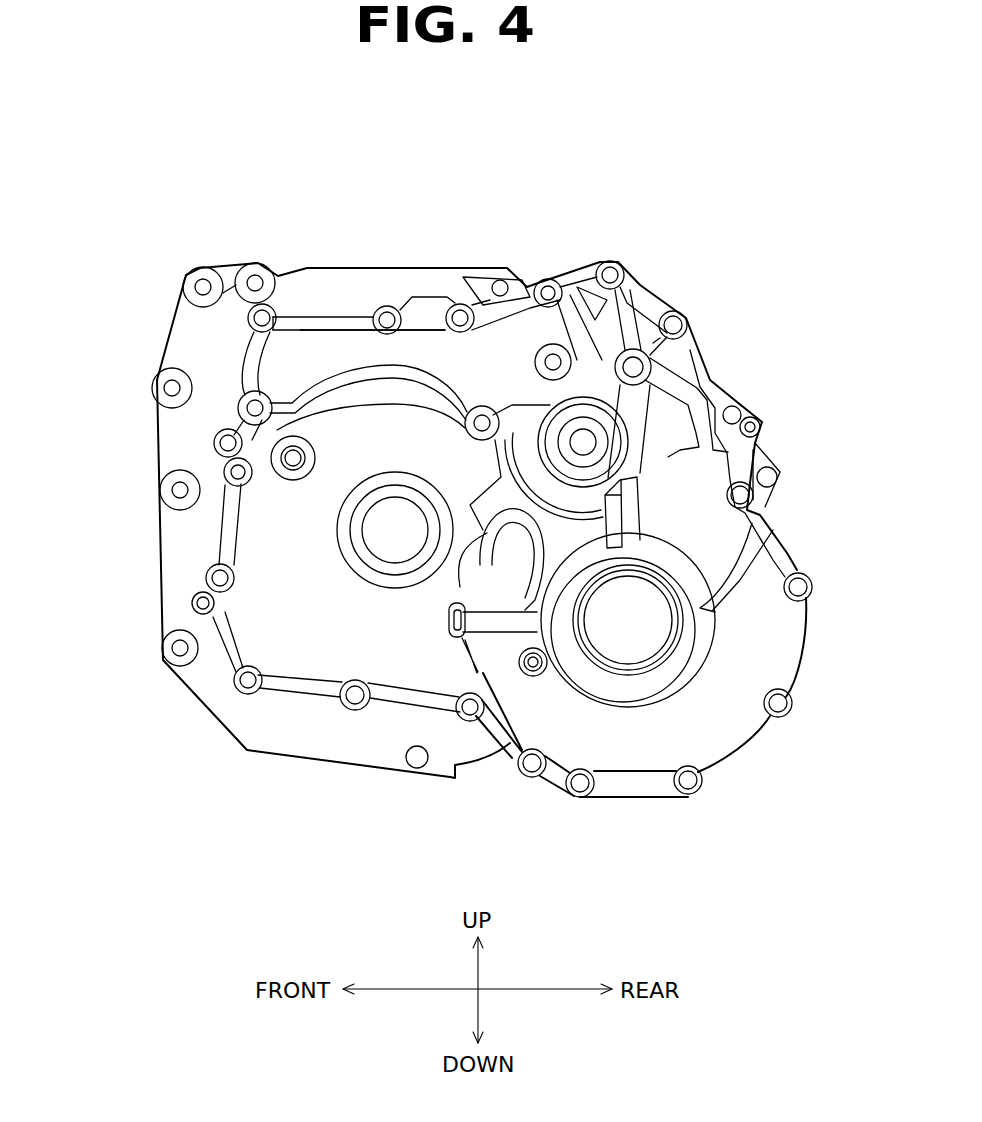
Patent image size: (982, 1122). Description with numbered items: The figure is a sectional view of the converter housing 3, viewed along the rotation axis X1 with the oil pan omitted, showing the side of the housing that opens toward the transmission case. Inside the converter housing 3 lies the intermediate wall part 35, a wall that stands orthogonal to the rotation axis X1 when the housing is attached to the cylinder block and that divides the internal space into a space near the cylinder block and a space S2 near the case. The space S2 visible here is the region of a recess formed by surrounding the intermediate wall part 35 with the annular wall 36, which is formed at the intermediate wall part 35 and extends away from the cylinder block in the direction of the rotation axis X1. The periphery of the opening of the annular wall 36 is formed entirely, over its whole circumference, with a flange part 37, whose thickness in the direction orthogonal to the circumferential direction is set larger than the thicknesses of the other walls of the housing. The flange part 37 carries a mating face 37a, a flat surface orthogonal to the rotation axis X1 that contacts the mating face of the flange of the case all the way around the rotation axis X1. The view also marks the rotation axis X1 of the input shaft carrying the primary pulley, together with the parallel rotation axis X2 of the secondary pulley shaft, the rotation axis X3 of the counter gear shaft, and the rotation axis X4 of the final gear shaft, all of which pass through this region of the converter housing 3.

The converter housing 3 is at (683, 268).
The intermediate wall part 35 is at (313, 663).
The annular wall 36 is at (217, 537).
The flange part 37 is at (433, 293).
The mating face 37a is at (327, 325).
The space S2 is at (302, 567).
The rotation axis X1 is at (395, 530).
The rotation axis X2 is at (553, 362).
The rotation axis X3 is at (583, 442).
The rotation axis X4 is at (628, 620).